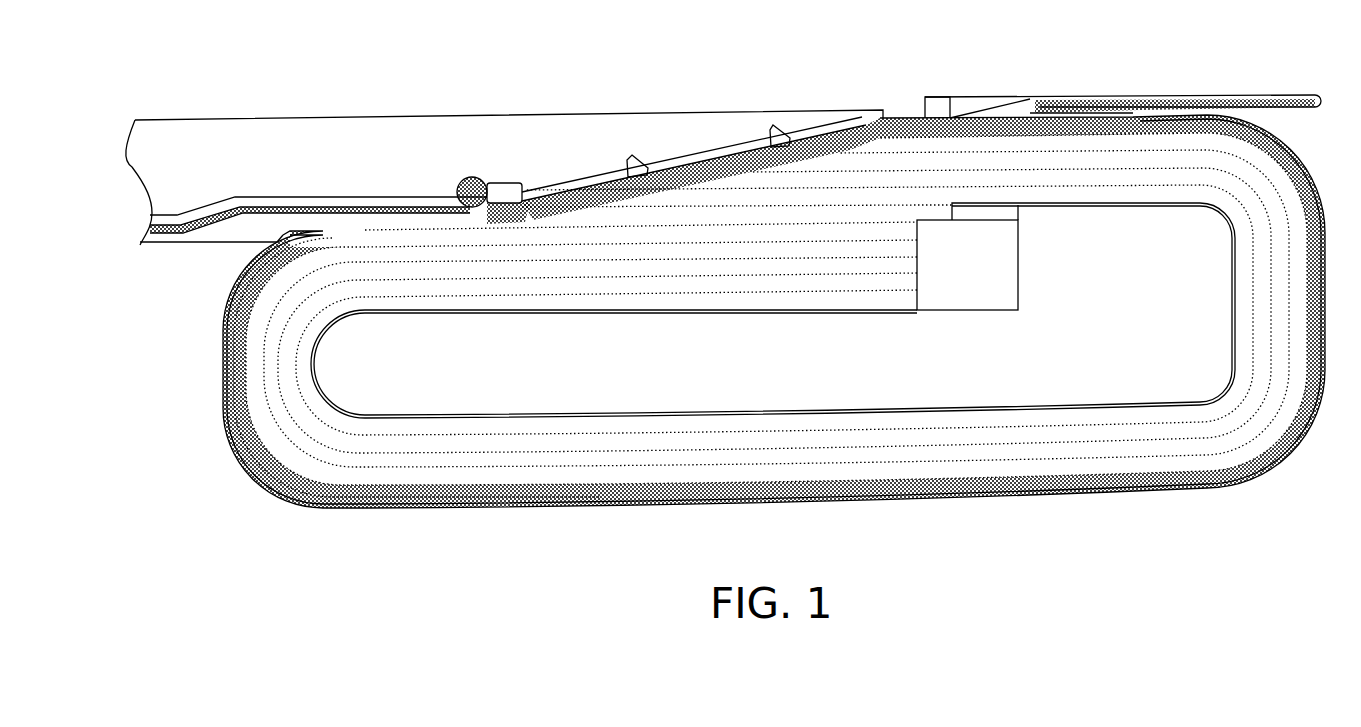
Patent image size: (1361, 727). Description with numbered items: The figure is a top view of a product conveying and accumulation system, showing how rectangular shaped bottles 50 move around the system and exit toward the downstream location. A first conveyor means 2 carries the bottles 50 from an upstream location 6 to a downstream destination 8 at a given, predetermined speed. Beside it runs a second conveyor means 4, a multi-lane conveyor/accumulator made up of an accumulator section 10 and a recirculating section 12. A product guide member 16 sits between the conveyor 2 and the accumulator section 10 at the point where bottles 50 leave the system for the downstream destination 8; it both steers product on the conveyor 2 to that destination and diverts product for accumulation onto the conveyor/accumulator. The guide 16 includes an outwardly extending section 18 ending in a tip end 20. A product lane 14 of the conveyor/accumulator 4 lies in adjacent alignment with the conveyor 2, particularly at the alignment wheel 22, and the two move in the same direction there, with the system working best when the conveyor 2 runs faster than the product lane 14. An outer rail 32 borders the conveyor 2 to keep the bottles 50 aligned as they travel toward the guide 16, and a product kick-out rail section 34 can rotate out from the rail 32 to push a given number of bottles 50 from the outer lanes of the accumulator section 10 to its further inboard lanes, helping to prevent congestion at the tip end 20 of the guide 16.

The first conveyor means 2 is at (268, 200).
The second conveyor means 4 is at (885, 300).
The upstream location 6 is at (1133, 103).
The downstream destination 8 is at (203, 231).
The accumulator section 10 is at (637, 268).
The recirculating section 12 is at (473, 463).
The product lane 14 is at (685, 233).
The product guide member 16 is at (292, 237).
The outwardly extending section 18 is at (468, 218).
The tip end 20 is at (467, 210).
The alignment wheel 22 is at (478, 178).
The outer rail 32 is at (680, 153).
The product kick-out rail section 34 is at (745, 148).
The rectangular shaped bottles 50 is at (933, 120).